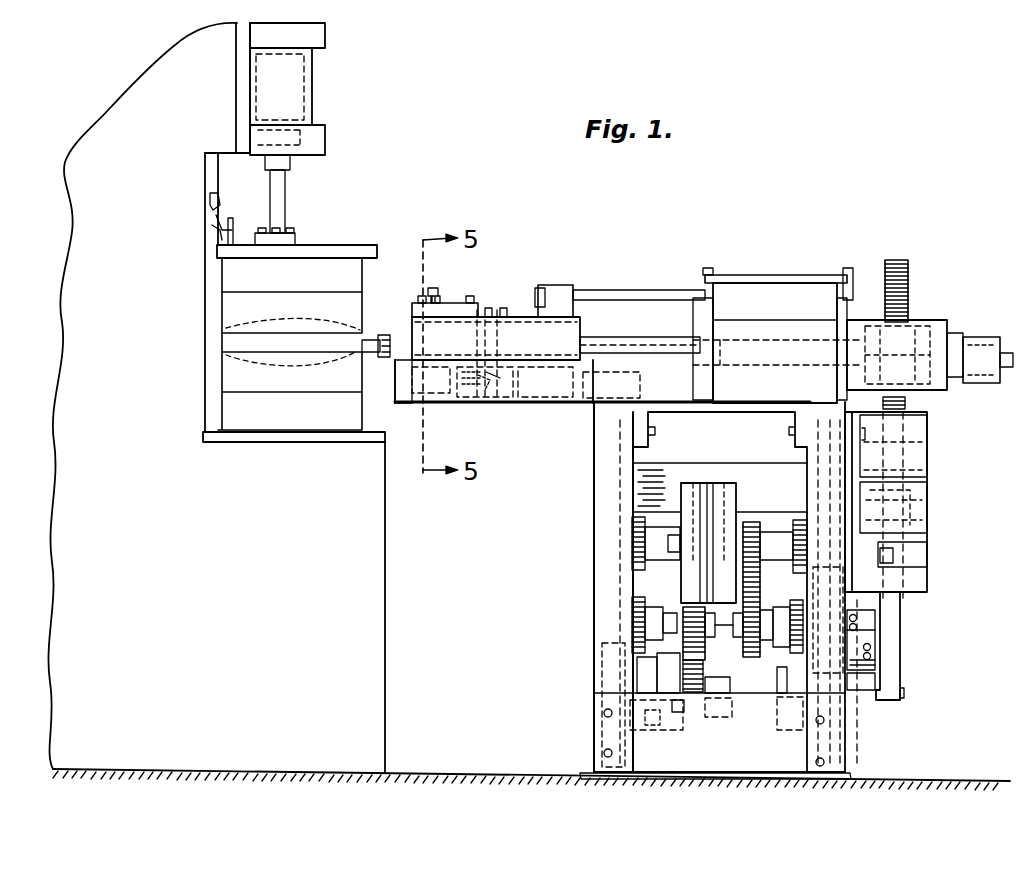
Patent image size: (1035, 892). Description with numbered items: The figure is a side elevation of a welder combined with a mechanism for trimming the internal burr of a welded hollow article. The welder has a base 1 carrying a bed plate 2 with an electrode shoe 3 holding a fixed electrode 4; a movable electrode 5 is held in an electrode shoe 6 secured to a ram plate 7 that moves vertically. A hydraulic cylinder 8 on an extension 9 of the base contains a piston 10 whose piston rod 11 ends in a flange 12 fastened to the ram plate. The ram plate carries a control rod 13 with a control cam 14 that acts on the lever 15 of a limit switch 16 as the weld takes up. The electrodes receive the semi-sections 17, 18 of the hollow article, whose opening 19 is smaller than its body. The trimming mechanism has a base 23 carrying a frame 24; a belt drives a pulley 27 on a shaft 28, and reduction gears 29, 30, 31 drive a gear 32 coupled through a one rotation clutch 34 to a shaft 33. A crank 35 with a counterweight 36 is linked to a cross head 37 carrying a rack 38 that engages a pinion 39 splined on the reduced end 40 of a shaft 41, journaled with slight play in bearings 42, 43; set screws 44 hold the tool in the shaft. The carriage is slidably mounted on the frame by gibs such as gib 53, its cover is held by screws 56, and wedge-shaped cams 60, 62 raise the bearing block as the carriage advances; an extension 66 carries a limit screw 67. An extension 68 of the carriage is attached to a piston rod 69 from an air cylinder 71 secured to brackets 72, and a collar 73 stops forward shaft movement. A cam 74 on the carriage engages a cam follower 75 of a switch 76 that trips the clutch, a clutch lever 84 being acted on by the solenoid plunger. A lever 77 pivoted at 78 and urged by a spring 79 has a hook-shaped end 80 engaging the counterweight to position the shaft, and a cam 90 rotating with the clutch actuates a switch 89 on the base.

The base 1 is at (370, 637).
The bed plate 2 is at (386, 443).
The electrode shoe 3 is at (354, 422).
The electrode 4 is at (357, 382).
The movable electrode 5 is at (355, 305).
The electrode shoe 6 is at (355, 278).
The ram plate 7 is at (368, 246).
The hydraulic cylinder 8 is at (312, 100).
The extension 9 is at (132, 106).
The piston 10 is at (325, 138).
The piston rod 11 is at (285, 205).
The flange 12 is at (300, 240).
The control rod 13 is at (233, 230).
The control cam 14 is at (226, 225).
The lever 15 is at (218, 232).
The limit switch 16 is at (210, 200).
The semi-section 17 is at (310, 318).
The semi-section 18 is at (300, 372).
The opening 19 is at (364, 340).
The base 23 is at (593, 550).
The frame 24 is at (572, 406).
The pulley 27 is at (732, 483).
The shaft 28 is at (755, 522).
The gear 29 is at (752, 567).
The gear 30 is at (752, 603).
The gear 31 is at (688, 607).
The gear 32 is at (703, 665).
The shaft 33 is at (780, 690).
The clutch 34 is at (645, 663).
The crank 35 is at (904, 690).
The counterweight 36 is at (900, 627).
The cross head 37 is at (920, 458).
The rack 38 is at (905, 262).
The pinion 39 is at (930, 325).
The reduced end 40 is at (771, 345).
The shaft 41 is at (642, 336).
The bearing 42 is at (897, 322).
The bearing 43 is at (975, 340).
The set screws 44 is at (380, 370).
The gib 53 is at (593, 347).
The screws 56 is at (470, 297).
The wedge-shaped cam 60 is at (426, 360).
The wedge-shaped cam 62 is at (432, 395).
The extension 66 is at (490, 308).
The limit screw 67 is at (504, 308).
The extension 68 is at (560, 290).
The piston rod 69 is at (628, 290).
The cylinder 71 is at (803, 282).
The brackets 72 is at (705, 305).
The collar 73 is at (985, 385).
The cam 74 is at (510, 400).
The cam follower 75 is at (487, 405).
The switch 76 is at (487, 405).
The lever 77 is at (868, 610).
The pivot 78 is at (872, 660).
The spring 79 is at (873, 648).
The hook-shaped end 80 is at (640, 603).
The clutch lever 84 is at (652, 728).
The switch 89 is at (682, 695).
The cam 90 is at (650, 628).